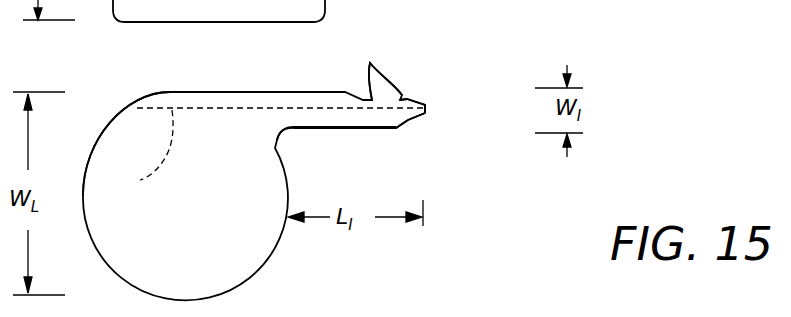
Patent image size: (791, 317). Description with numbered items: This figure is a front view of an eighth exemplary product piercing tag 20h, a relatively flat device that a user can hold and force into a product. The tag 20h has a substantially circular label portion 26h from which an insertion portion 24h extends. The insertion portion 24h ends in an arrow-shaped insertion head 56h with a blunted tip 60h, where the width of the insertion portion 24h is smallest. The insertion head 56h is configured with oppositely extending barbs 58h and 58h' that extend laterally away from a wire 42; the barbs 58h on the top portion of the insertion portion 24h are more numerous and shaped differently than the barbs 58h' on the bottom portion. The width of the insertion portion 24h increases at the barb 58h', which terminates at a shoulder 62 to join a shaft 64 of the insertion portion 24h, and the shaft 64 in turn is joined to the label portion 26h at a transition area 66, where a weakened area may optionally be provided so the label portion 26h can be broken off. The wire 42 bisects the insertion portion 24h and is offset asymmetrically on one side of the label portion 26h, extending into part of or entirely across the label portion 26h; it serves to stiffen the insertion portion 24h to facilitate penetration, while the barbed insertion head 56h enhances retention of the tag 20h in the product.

The tag 20h is at (443, 68).
The label portion 26h is at (122, 152).
The wire 42 is at (140, 180).
The transition area 66 is at (282, 118).
The shaft 64 is at (327, 117).
The insertion portion 24h is at (343, 117).
The shoulder 62 is at (392, 128).
The barbs 58h is at (374, 70).
The barbs 58h' is at (417, 155).
The insertion head 56h is at (413, 118).
The tip 60h is at (425, 106).